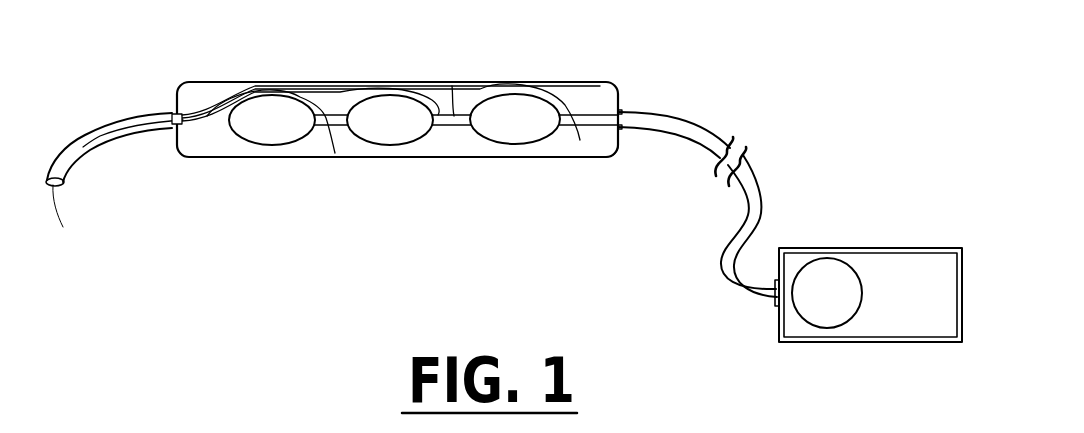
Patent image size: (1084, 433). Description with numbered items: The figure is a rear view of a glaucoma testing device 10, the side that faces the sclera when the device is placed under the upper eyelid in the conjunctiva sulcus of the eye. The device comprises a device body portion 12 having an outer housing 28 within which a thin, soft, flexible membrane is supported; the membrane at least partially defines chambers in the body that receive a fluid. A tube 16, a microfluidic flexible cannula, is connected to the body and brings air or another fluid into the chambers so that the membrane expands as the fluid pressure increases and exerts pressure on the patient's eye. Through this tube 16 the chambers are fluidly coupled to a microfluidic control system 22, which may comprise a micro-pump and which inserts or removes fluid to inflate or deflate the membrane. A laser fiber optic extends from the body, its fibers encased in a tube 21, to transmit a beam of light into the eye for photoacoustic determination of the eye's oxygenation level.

The glaucoma testing device 10 is at (203, 241).
The device body portion 12 is at (495, 150).
The tube 16 is at (658, 113).
The tube 21 is at (105, 108).
The microfluidic control system 22 is at (910, 287).
The outer housing 28 is at (582, 157).